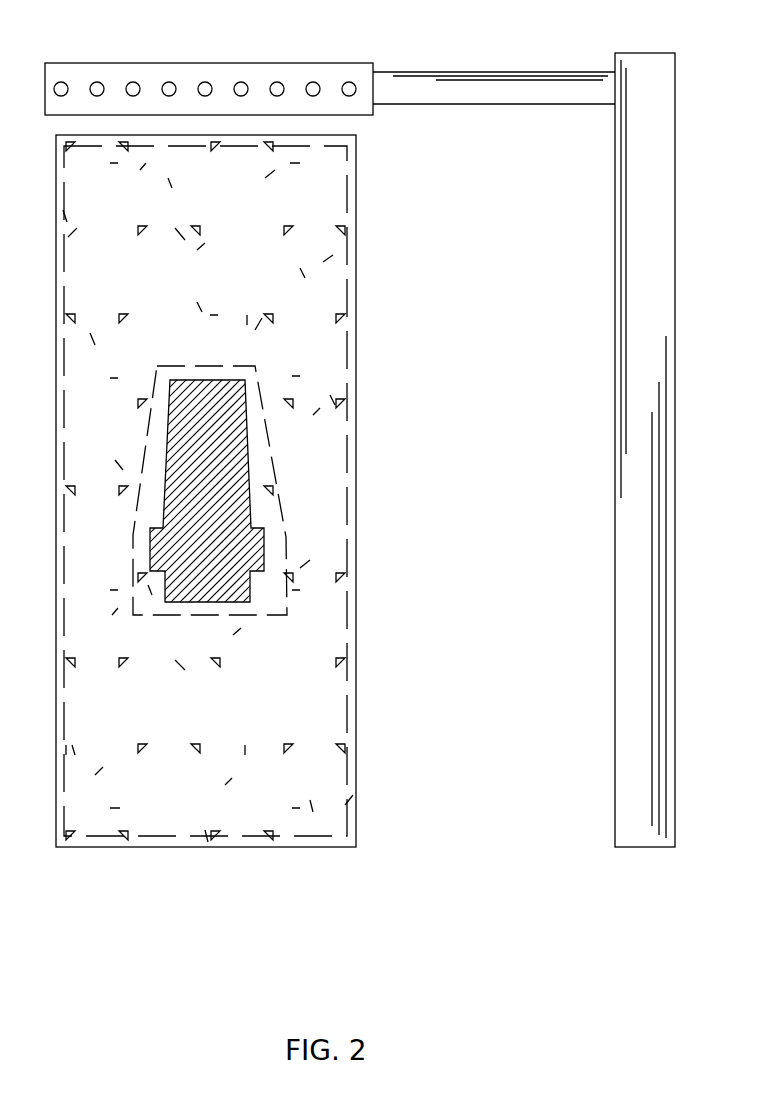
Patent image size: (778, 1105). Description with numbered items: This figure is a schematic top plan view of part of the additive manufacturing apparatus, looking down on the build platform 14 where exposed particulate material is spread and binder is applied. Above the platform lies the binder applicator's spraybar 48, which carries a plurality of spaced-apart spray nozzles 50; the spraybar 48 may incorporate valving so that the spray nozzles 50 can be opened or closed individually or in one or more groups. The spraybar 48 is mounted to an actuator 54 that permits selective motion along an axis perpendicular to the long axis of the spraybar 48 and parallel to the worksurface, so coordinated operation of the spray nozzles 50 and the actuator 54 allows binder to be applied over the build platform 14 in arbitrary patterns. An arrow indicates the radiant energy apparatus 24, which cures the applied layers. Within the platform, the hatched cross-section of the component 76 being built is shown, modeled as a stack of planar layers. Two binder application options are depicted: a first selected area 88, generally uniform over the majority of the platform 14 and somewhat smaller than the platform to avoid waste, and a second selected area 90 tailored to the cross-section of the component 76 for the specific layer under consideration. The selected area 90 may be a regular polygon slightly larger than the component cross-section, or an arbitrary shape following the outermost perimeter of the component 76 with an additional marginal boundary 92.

The build platform 14 is at (357, 300).
The radiant energy apparatus 24 is at (533, 162).
The spraybar 48 is at (148, 73).
The spray nozzles 50 is at (277, 89).
The actuator 54 is at (624, 329).
The component 76 is at (215, 380).
The selected area 88 is at (346, 215).
The selected area 90 is at (262, 412).
The marginal boundary 92 is at (270, 620).